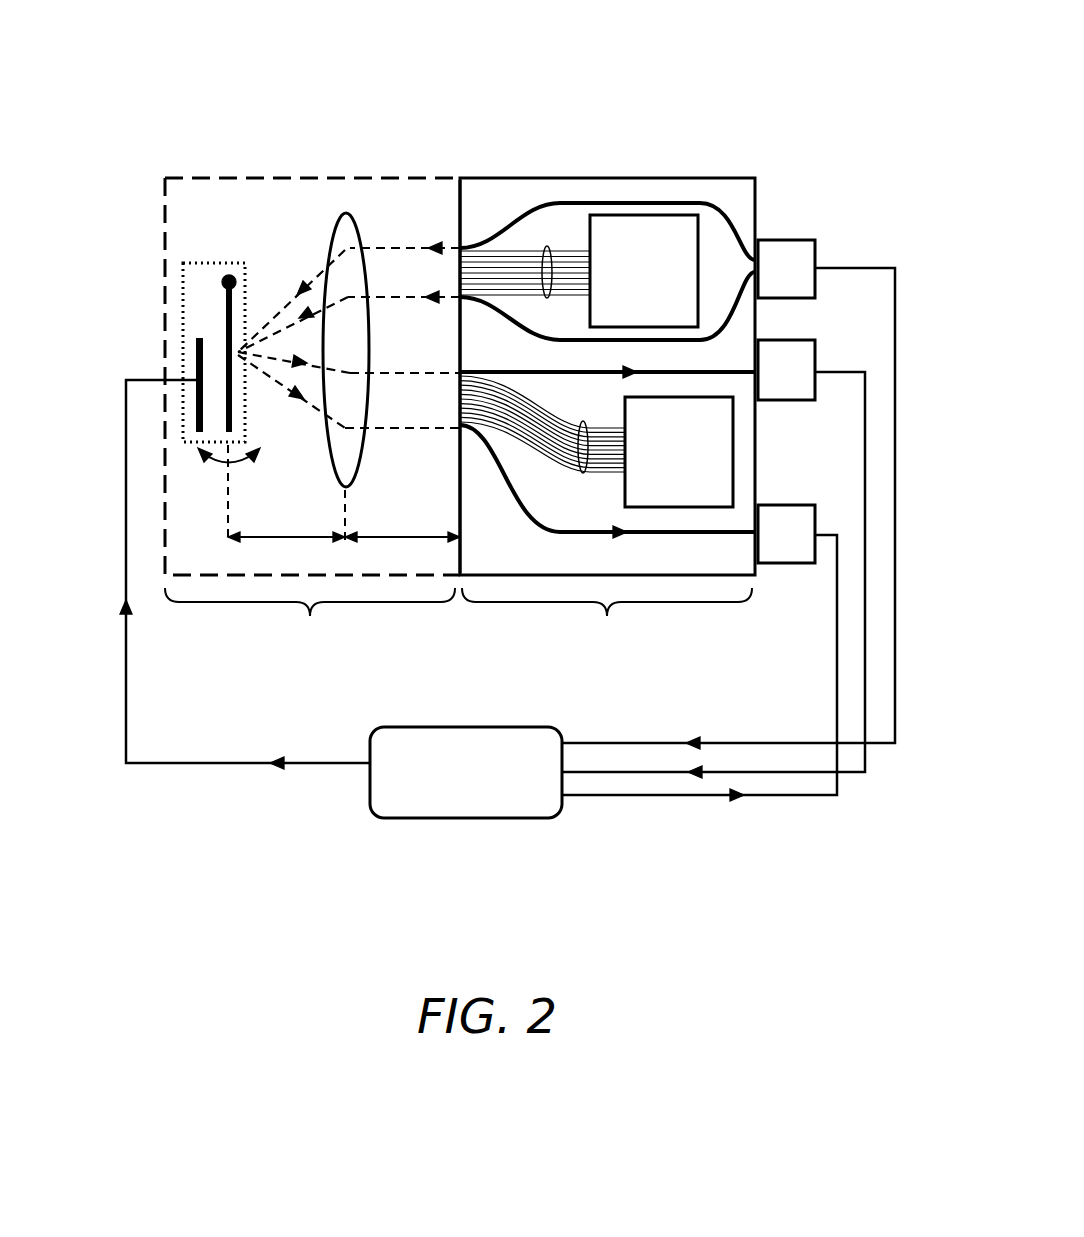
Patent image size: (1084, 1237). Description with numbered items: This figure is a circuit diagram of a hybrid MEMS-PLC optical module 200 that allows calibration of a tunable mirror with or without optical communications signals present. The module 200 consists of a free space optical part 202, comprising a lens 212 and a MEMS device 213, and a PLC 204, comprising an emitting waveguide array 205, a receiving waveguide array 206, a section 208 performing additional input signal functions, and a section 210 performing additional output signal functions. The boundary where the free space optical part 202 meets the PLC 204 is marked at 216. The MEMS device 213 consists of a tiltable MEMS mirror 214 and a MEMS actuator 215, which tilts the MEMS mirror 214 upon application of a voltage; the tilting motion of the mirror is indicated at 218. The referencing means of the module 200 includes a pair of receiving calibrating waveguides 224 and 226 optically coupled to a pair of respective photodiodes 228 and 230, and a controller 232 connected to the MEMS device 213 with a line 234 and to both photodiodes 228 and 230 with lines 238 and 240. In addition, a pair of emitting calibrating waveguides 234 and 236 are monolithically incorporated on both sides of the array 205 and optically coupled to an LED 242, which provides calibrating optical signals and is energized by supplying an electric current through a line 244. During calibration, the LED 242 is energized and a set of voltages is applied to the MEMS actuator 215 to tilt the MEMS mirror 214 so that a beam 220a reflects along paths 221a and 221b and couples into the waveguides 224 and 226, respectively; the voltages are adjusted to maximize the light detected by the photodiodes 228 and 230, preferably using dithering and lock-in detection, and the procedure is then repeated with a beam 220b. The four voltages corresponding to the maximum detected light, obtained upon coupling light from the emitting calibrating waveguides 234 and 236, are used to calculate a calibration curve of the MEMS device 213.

The module 200 is at (306, 24).
The free space optical part 202 is at (312, 418).
The PLC 204 is at (607, 418).
The emitting waveguide array 205 is at (548, 245).
The receiving waveguide array 206 is at (578, 470).
The section performing additional input signal functions 208 is at (579, 271).
The section performing additional output signal functions 210 is at (596, 441).
The lens 212 is at (346, 214).
The MEMS device 213 is at (183, 283).
The tiltable MEMS mirror 214 is at (232, 305).
The MEMS actuator 215 is at (198, 338).
The edge of planar lightwave circuit 216 is at (460, 195).
The mirror rotation 218 is at (221, 492).
The beam 220a is at (401, 248).
The beam 220b is at (398, 300).
The path 221a is at (288, 362).
The path 221b is at (315, 406).
The receiving calibrating waveguide 224 is at (582, 372).
The receiving calibrating waveguide 226 is at (532, 505).
The photodiode 228 is at (786, 370).
The photodiode 230 is at (786, 534).
The controller 232 is at (466, 772).
The line / emitting calibrating waveguide 234 is at (640, 203).
The emitting calibrating waveguide 236 is at (500, 300).
The line 238 is at (613, 772).
The line 240 is at (733, 743).
The LED 242 is at (786, 269).
The line 244 is at (773, 795).